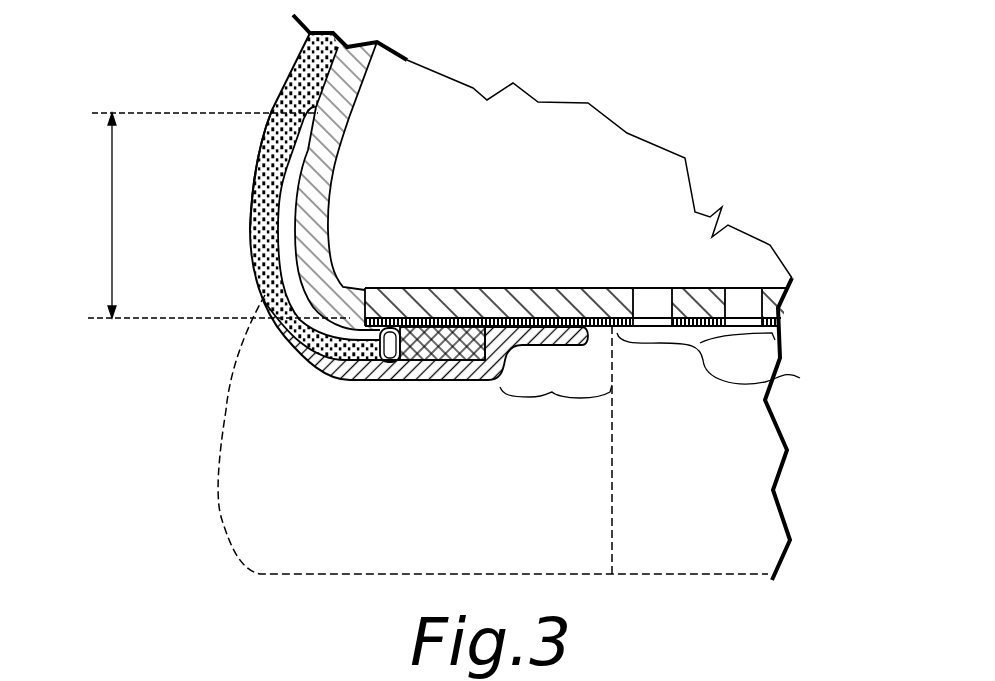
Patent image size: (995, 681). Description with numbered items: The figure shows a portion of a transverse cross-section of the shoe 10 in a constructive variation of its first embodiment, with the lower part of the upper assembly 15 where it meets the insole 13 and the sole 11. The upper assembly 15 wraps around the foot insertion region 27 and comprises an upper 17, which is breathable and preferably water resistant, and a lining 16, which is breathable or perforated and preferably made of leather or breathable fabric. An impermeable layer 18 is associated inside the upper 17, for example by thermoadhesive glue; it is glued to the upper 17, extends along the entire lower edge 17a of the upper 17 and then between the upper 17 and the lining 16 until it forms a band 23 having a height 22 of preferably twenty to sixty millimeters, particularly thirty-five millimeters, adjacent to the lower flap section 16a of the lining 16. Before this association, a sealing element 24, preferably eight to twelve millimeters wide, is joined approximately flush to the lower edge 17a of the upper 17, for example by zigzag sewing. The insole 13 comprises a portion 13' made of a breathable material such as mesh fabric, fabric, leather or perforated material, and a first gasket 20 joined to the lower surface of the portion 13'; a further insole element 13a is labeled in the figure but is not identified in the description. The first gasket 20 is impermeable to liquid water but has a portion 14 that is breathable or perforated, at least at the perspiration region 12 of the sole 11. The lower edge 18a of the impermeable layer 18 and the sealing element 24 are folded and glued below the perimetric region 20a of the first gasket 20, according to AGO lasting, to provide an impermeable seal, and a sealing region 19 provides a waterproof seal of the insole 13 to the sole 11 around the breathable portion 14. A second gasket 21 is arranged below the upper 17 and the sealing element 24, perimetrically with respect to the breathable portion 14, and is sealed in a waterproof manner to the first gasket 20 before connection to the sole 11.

The shoe 10 is at (740, 143).
The sole 11 is at (206, 513).
The perspiration region 12 is at (707, 477).
The insole 13 is at (576, 243).
The outer layer of pane 13a is at (385, 298).
The breathable portion of insole 13' is at (499, 264).
The breathable or perforated portion 14 is at (727, 429).
The upper assembly 15 is at (240, 187).
The lining 16 is at (380, 77).
The lower flap section of lining 16a is at (270, 300).
The upper 17 is at (279, 68).
The lower edge of upper 17a is at (260, 243).
The impermeable layer 18 is at (286, 128).
The lower edge of impermeable layer 18a is at (420, 330).
The sealing region 19 is at (547, 390).
The first gasket 20 is at (574, 344).
The perimetric region of first gasket 20a is at (386, 348).
The second gasket 21 is at (543, 390).
The height of band 22 is at (112, 212).
The band 23 is at (293, 157).
The sealing element 24 is at (430, 337).
The foot insertion region 27 is at (568, 190).